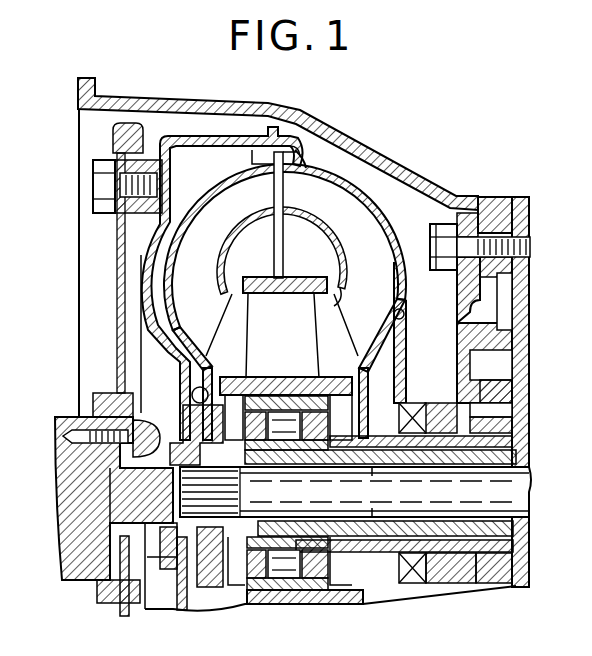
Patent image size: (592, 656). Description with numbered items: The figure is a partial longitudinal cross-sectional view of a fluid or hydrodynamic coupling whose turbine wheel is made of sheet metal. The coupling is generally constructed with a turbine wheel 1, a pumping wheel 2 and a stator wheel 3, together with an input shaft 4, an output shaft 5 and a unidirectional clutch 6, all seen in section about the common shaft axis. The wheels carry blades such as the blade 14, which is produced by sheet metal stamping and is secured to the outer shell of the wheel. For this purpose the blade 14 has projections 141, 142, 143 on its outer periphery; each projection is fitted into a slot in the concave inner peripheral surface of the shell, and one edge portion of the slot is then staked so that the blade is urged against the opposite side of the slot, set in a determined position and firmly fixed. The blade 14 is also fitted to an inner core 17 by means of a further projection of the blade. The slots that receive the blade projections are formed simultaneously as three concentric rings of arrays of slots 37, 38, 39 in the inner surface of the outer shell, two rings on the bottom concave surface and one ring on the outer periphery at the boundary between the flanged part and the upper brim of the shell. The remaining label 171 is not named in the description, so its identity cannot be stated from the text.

The clutch housing 1 is at (216, 152).
The clutch cover 2 is at (365, 186).
The release hub plate 3 is at (255, 276).
The transmission housing 4 is at (60, 579).
The input shaft 5 is at (520, 486).
The release bearing 6 is at (286, 604).
The housing flange plate 14 is at (440, 170).
The spring ring 17 is at (340, 264).
The diaphragm spring 37 is at (399, 332).
The bolt 38 is at (404, 258).
The cover seat 39 is at (298, 150).
The fulcrum ring 141 is at (411, 312).
The cover side wall 142 is at (393, 252).
The cover rim 143 is at (292, 154).
The inner spring ring 171 is at (300, 213).